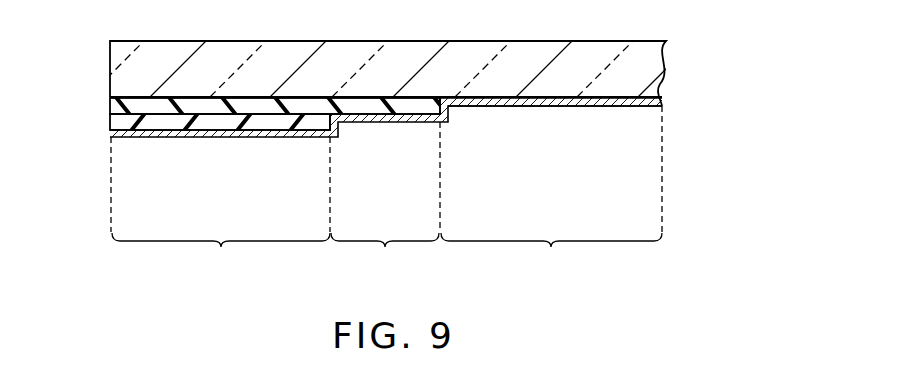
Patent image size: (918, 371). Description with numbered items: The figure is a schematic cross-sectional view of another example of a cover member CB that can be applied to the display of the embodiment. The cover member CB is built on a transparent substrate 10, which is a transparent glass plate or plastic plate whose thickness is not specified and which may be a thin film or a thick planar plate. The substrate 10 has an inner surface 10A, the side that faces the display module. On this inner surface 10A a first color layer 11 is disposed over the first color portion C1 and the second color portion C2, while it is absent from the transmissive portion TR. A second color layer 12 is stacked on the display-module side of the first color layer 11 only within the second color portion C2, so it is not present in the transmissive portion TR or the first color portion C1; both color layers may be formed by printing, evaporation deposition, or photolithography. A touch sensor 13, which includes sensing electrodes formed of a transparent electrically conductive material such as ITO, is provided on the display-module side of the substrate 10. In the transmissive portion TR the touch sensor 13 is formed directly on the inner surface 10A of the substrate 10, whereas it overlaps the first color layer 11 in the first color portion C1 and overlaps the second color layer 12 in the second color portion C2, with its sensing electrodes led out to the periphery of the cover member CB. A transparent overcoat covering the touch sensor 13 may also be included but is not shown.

The transparent substrate 10 is at (665, 64).
The inner surface 10A is at (648, 109).
The first color layer 11 is at (110, 106).
The second color layer 12 is at (110, 129).
The touch sensor 13 is at (553, 107).
The cover member CB is at (411, 87).
The first color portion C1 is at (385, 257).
The second color portion C2 is at (221, 257).
The transmissive portion TR is at (551, 257).